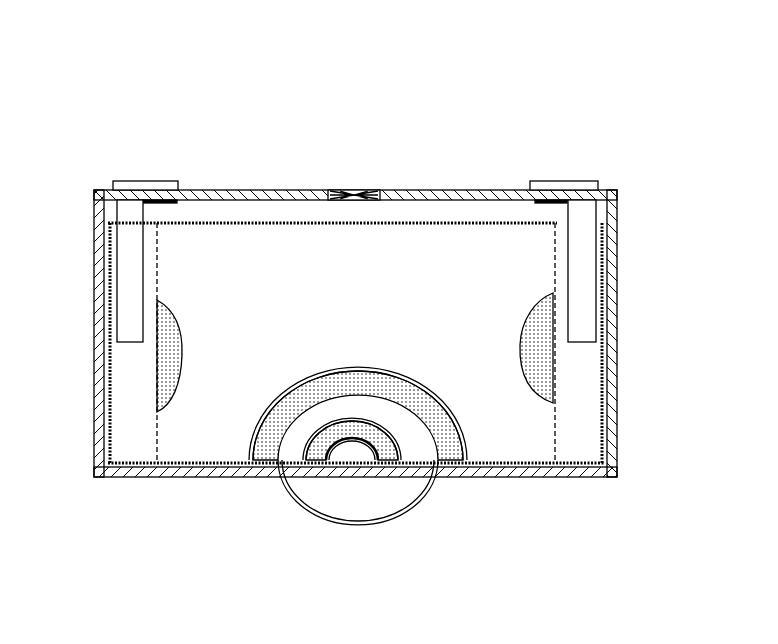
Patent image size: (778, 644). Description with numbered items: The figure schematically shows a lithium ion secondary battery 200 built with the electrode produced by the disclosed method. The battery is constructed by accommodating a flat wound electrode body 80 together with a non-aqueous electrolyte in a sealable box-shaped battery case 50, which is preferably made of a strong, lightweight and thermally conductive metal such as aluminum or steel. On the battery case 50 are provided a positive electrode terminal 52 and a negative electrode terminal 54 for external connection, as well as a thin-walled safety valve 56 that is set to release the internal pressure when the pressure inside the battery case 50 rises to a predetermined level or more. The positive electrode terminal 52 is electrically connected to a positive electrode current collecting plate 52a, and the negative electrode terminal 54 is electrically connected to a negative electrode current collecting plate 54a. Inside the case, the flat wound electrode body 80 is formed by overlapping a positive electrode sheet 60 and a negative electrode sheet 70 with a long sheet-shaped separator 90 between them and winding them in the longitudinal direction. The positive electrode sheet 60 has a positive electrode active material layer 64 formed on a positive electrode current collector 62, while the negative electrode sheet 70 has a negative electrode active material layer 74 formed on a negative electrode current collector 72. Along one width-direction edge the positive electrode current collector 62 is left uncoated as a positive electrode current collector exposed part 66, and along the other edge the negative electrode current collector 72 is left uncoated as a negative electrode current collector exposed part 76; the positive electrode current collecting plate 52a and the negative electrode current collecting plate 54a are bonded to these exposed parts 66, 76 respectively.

The lithium ion secondary battery 200 is at (85, 56).
The battery case 50 is at (97, 188).
The positive electrode terminal 52 is at (157, 180).
The positive electrode current collecting plate 52a is at (130, 262).
The negative electrode terminal 54 is at (577, 181).
The negative electrode current collecting plate 54a is at (585, 252).
The thin-walled safety valve 56 is at (362, 190).
The positive electrode sheet 60 is at (267, 453).
The positive electrode current collector 62 is at (103, 363).
The positive electrode active material layer 64 is at (183, 335).
The positive electrode current collector exposed part 66 is at (120, 433).
The negative electrode sheet 70 is at (326, 455).
The negative electrode current collector 72 is at (605, 367).
The negative electrode active material layer 74 is at (521, 330).
The negative electrode current collector exposed part 76 is at (585, 430).
The flat wound electrode body 80 is at (277, 221).
The separator 90 is at (298, 450).